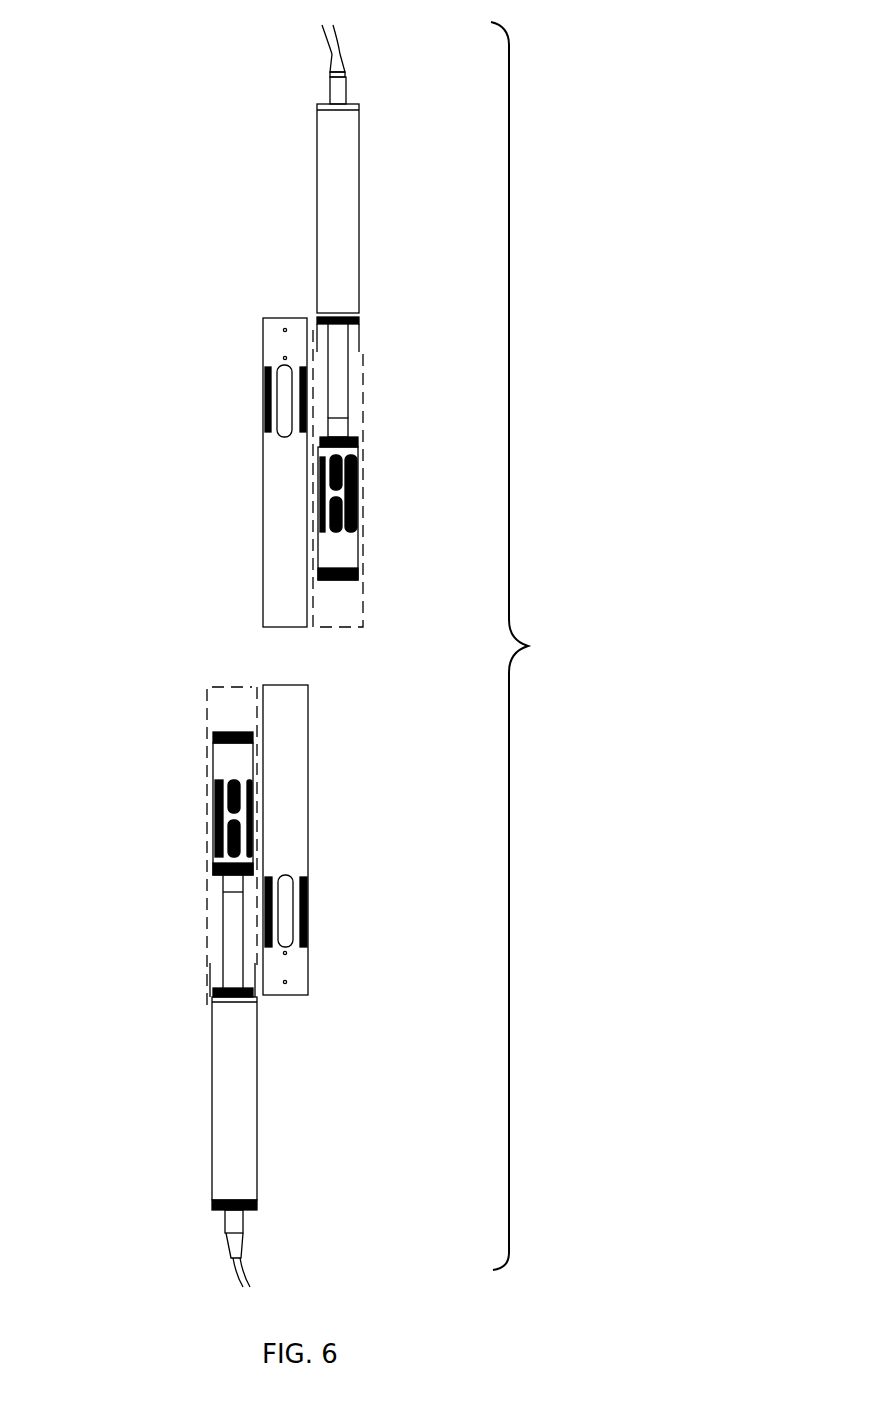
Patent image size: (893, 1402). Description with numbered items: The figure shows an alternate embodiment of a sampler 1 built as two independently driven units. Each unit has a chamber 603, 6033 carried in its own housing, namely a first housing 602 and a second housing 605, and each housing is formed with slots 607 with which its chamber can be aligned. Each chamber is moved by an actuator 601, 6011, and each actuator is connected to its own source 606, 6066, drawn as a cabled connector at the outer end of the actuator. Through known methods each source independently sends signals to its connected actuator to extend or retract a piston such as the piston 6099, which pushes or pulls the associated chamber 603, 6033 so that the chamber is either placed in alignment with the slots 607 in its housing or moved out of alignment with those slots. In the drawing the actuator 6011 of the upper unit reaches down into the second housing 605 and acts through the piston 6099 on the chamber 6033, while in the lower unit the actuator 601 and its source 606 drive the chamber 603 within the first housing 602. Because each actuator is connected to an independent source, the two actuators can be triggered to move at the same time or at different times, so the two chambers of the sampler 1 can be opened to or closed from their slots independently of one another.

The electronic cigarette assembly 1 is at (537, 646).
The actuator 601 is at (222, 1098).
The first housing 602 is at (210, 705).
The chamber 603 is at (227, 763).
The second housing 605 is at (263, 520).
The source 606 is at (230, 1233).
The slots 607 is at (312, 925).
The actuator 6011 is at (337, 378).
The chamber 6033 is at (342, 543).
The source 6066 is at (348, 90).
The piston 6099 is at (350, 432).